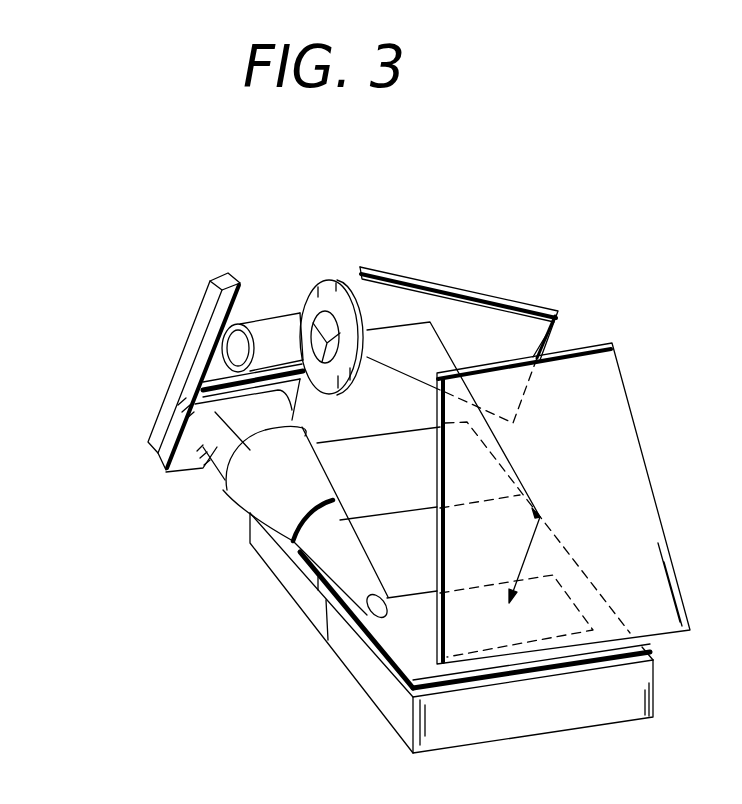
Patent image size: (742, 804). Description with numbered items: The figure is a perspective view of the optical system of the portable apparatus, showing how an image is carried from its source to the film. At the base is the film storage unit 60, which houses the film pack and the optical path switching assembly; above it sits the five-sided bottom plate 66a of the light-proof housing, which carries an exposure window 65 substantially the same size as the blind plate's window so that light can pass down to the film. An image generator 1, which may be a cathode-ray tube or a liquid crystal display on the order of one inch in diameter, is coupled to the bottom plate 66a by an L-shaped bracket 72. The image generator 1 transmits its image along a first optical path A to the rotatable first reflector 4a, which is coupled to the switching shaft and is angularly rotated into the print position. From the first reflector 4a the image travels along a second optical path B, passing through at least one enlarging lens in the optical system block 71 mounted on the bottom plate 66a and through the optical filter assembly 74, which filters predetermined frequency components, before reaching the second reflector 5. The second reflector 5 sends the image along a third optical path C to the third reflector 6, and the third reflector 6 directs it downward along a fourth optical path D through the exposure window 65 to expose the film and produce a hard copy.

The image generator 1 is at (258, 502).
The first reflector 4a is at (213, 320).
The second reflector 5 is at (490, 303).
The third reflector 6 is at (633, 453).
The film storage unit 60 is at (462, 727).
The exposure window 65 is at (520, 642).
The bottom plate 66a is at (407, 643).
The optical system block 71 is at (280, 320).
The L-shaped bracket 72 is at (157, 468).
The optical filter assembly 74 is at (327, 275).
The first optical path A is at (240, 356).
The second optical path B is at (404, 327).
The third optical path C is at (513, 467).
The fourth optical path D is at (528, 553).